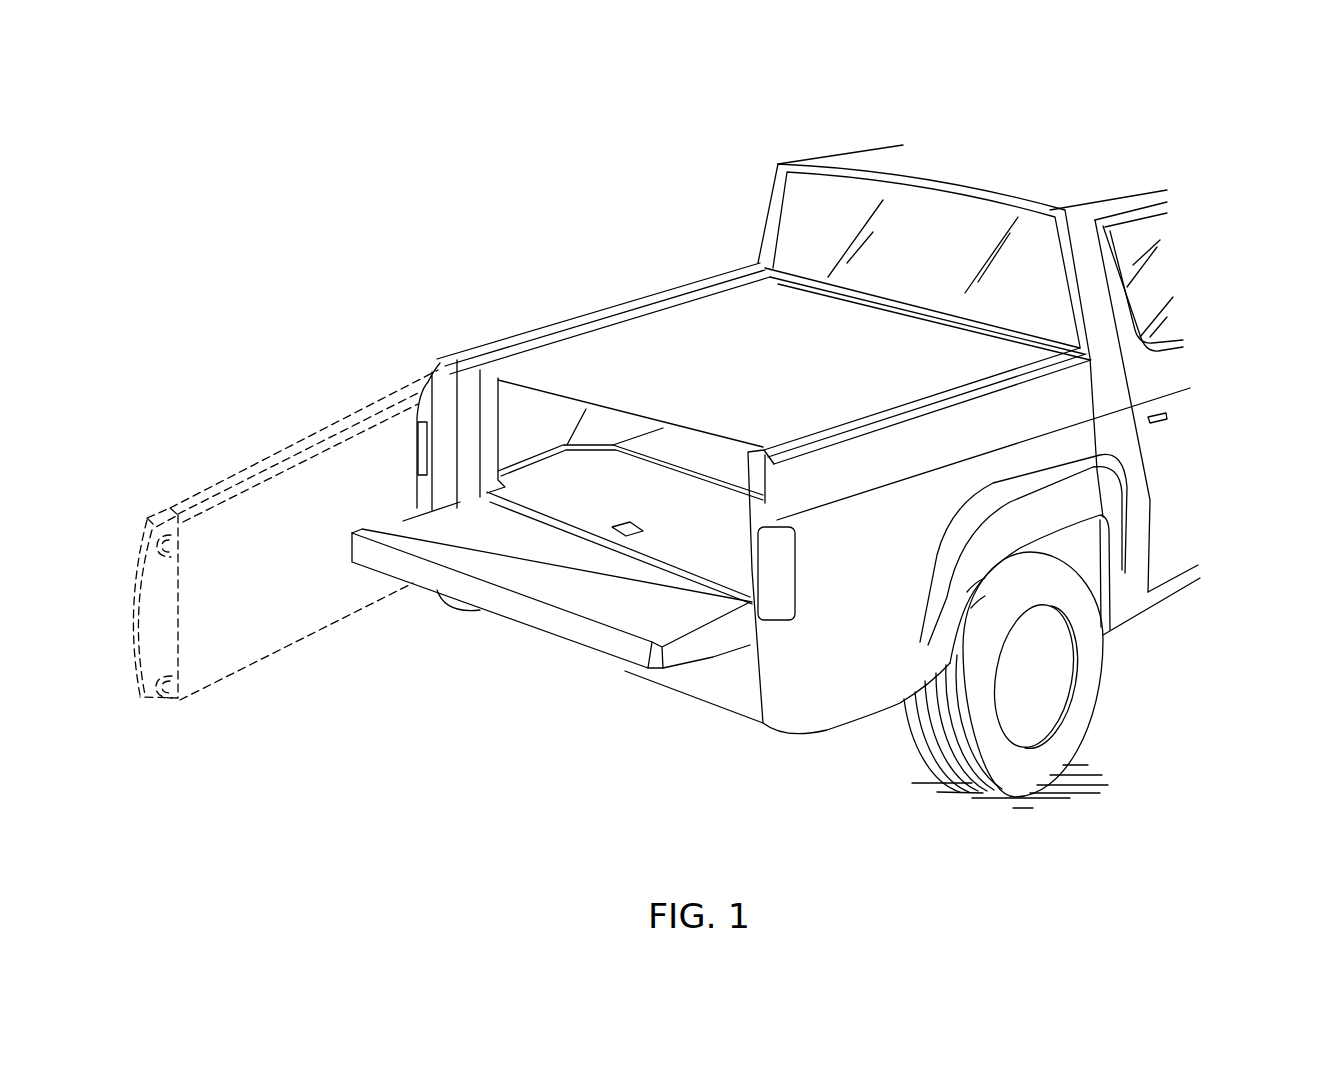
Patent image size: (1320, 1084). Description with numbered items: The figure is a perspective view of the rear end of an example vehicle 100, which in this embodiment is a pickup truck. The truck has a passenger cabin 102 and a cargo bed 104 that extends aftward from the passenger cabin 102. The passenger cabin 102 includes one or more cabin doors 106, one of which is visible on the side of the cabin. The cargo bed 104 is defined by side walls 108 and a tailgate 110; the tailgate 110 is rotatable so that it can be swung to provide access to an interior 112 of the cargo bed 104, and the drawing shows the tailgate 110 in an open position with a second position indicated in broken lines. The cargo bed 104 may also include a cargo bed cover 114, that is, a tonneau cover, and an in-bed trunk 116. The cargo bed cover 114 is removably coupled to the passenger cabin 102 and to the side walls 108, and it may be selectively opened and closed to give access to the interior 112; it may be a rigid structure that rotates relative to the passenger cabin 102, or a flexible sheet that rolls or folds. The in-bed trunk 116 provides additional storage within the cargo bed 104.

The vehicle 100 is at (1128, 110).
The passenger cabin 102 is at (1187, 217).
The cargo bed 104 is at (580, 257).
The cabin door 106 is at (1183, 530).
The side wall 108 is at (515, 333).
The tailgate 110 is at (578, 585).
The interior of cargo bed 112 is at (497, 447).
The cargo bed cover 114 is at (793, 369).
The in-bed trunk 116 is at (587, 500).